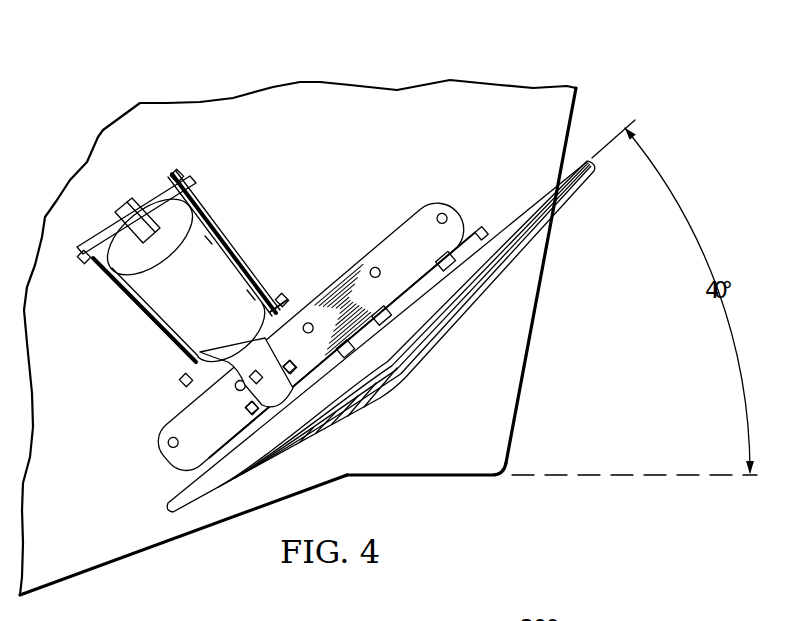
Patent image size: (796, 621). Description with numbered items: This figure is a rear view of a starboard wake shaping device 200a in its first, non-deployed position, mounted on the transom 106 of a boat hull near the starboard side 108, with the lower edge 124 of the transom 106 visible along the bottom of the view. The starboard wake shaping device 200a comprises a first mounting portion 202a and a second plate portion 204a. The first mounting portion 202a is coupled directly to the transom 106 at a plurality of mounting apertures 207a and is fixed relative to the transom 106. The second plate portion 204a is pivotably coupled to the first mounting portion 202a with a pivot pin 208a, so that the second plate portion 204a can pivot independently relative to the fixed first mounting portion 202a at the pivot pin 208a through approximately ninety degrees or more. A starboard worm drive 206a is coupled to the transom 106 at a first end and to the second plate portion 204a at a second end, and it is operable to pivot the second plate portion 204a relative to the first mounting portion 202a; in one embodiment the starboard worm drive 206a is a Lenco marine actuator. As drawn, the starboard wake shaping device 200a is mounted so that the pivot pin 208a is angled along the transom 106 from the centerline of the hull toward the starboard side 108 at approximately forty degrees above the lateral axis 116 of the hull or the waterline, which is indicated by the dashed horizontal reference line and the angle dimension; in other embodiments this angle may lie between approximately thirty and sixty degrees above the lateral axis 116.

The starboard wake shaping device 200a is at (388, 313).
The starboard side 108 is at (577, 100).
The transom 106 is at (108, 547).
The lower edge 124 is at (417, 478).
The lateral axis 116 is at (612, 476).
The second plate portion 204a is at (534, 210).
The first mounting portion 202a is at (321, 295).
The mounting apertures 207a is at (373, 266).
The pivot pin 208a is at (490, 230).
The starboard worm drive 206a is at (212, 268).